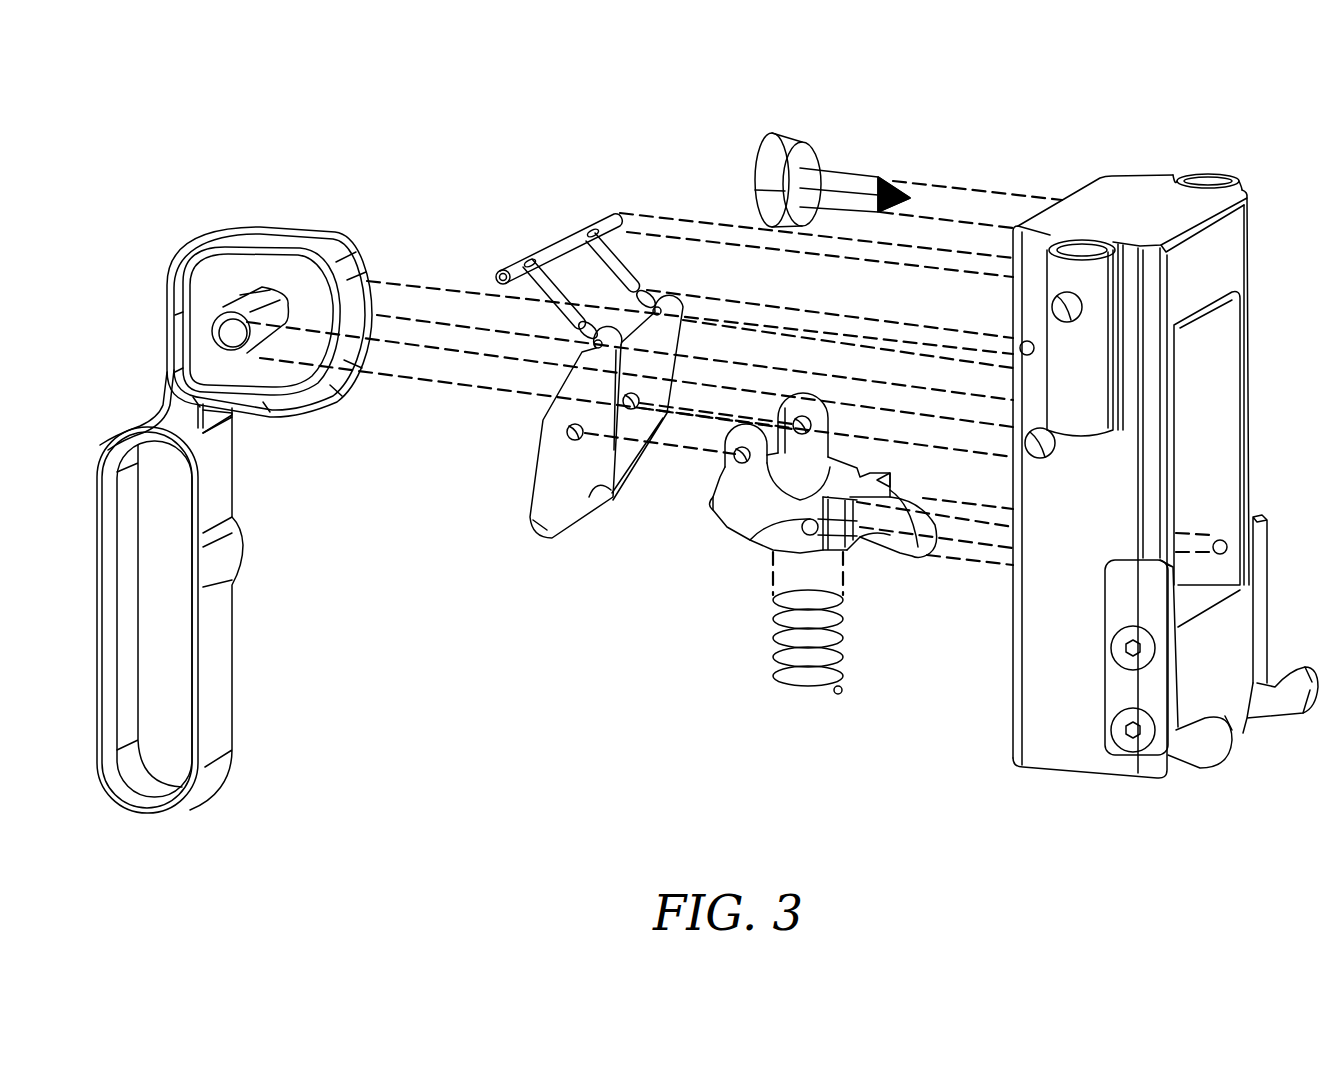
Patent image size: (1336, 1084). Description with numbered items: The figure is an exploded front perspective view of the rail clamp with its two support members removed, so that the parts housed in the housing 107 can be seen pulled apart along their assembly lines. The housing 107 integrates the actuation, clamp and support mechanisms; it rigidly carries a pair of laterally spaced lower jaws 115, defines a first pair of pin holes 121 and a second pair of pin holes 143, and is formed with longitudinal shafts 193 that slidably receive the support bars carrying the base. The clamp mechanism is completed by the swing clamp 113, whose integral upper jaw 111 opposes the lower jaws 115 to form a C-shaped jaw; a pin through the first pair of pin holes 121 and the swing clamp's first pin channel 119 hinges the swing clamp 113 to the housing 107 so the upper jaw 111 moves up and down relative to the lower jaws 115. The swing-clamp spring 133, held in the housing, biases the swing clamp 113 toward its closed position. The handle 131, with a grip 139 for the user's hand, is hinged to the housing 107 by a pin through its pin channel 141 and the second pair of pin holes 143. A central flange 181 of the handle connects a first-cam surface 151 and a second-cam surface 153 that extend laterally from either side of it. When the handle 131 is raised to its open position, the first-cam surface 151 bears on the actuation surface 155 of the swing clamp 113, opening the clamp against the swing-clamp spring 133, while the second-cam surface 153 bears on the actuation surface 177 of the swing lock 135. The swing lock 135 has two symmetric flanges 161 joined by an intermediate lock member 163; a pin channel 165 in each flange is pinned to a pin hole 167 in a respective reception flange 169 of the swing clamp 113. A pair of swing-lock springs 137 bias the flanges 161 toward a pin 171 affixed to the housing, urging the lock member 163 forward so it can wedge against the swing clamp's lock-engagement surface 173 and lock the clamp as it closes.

The housing 107 is at (1228, 467).
The upper jaw 111 is at (905, 545).
The swing clamp 113 is at (870, 480).
The lower jaws 115 is at (1282, 712).
The first pin channel 119 is at (762, 535).
The first pair of pin holes 121 is at (1228, 546).
The handle 131 is at (163, 410).
The swing-clamp spring 133 is at (805, 690).
The swing lock 135 is at (540, 514).
The swing-lock springs 137 is at (620, 265).
The grip 139 is at (123, 603).
The pin channel 141 is at (213, 338).
The second pair of pin holes 143 is at (1048, 457).
The first-cam surface 151 is at (340, 380).
The second-cam surface 153 is at (281, 312).
The actuation surface 155 is at (778, 455).
The flanges 161 is at (550, 466).
The lock member 163 is at (593, 505).
The pin channel 165 is at (565, 432).
The pin holes 167 is at (727, 482).
The reception flanges 169 is at (808, 440).
The pin 171 is at (565, 243).
The lock-engagement surface 173 is at (712, 515).
The actuation surface 177 is at (565, 370).
The central flange 181 is at (203, 279).
The longitudinal shafts 193 is at (1207, 188).